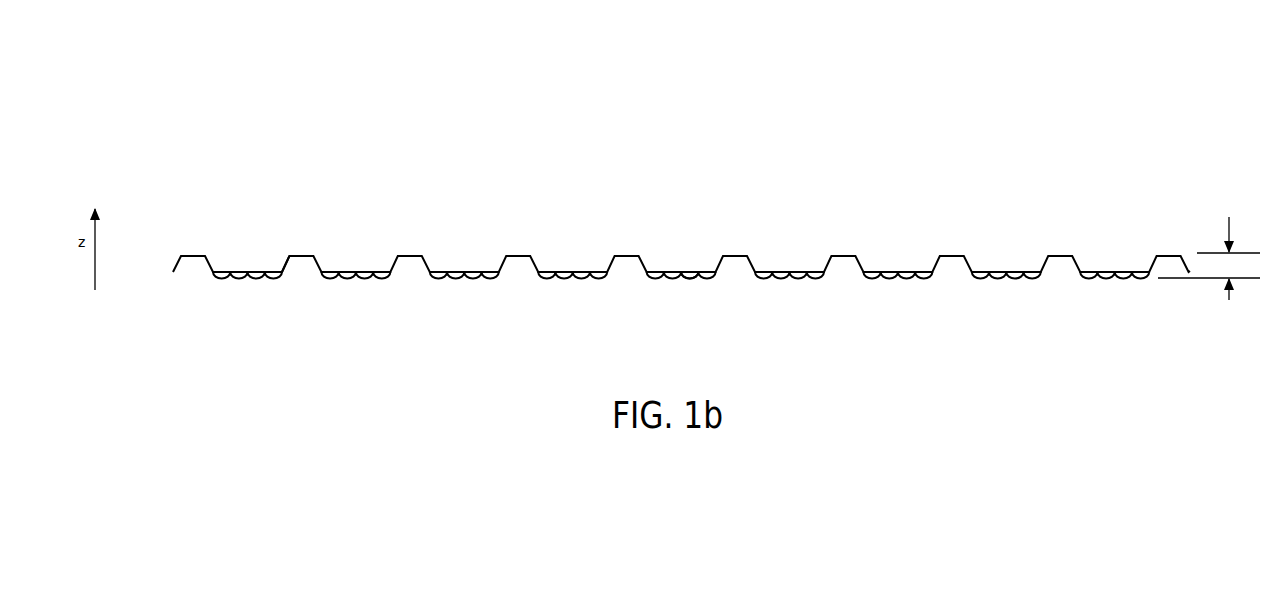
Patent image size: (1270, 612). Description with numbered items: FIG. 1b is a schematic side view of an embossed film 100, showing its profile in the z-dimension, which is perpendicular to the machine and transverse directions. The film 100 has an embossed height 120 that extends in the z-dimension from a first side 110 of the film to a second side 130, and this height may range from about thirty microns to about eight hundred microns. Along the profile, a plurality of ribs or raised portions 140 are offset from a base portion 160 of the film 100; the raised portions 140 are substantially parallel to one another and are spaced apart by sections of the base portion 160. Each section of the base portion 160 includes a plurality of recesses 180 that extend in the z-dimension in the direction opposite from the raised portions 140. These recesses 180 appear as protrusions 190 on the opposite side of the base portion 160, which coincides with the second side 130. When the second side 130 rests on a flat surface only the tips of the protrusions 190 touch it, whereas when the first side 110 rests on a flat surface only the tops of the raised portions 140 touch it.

The film 100 is at (162, 98).
The first side 110 is at (276, 229).
The embossed height 120 is at (1209, 258).
The second side 130 is at (268, 306).
The raised portions 140 is at (415, 255).
The base portion 160 is at (573, 271).
The recesses 180 is at (693, 271).
The protrusions 190 is at (692, 279).